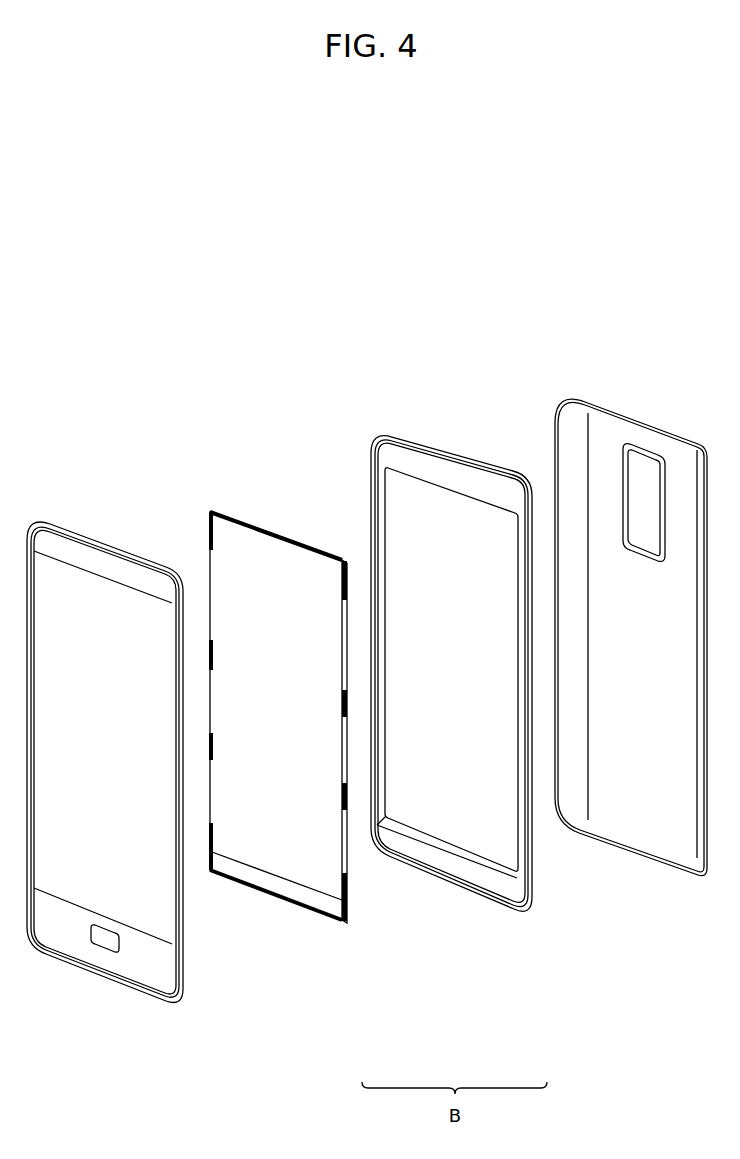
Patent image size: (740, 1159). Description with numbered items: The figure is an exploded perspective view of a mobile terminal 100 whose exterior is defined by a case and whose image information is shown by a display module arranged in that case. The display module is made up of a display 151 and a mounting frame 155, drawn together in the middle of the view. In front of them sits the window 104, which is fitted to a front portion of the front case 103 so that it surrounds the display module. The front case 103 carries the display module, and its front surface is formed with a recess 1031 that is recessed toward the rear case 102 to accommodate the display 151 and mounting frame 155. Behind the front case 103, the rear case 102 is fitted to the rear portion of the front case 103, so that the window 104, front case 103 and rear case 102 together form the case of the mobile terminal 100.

The mobile terminal 100 is at (103, 403).
The window 104 is at (181, 993).
The display 151 is at (241, 689).
The mounting frame 155 is at (280, 536).
The front case 103 is at (451, 733).
The recess 1031 is at (460, 543).
The rear case 102 is at (673, 850).